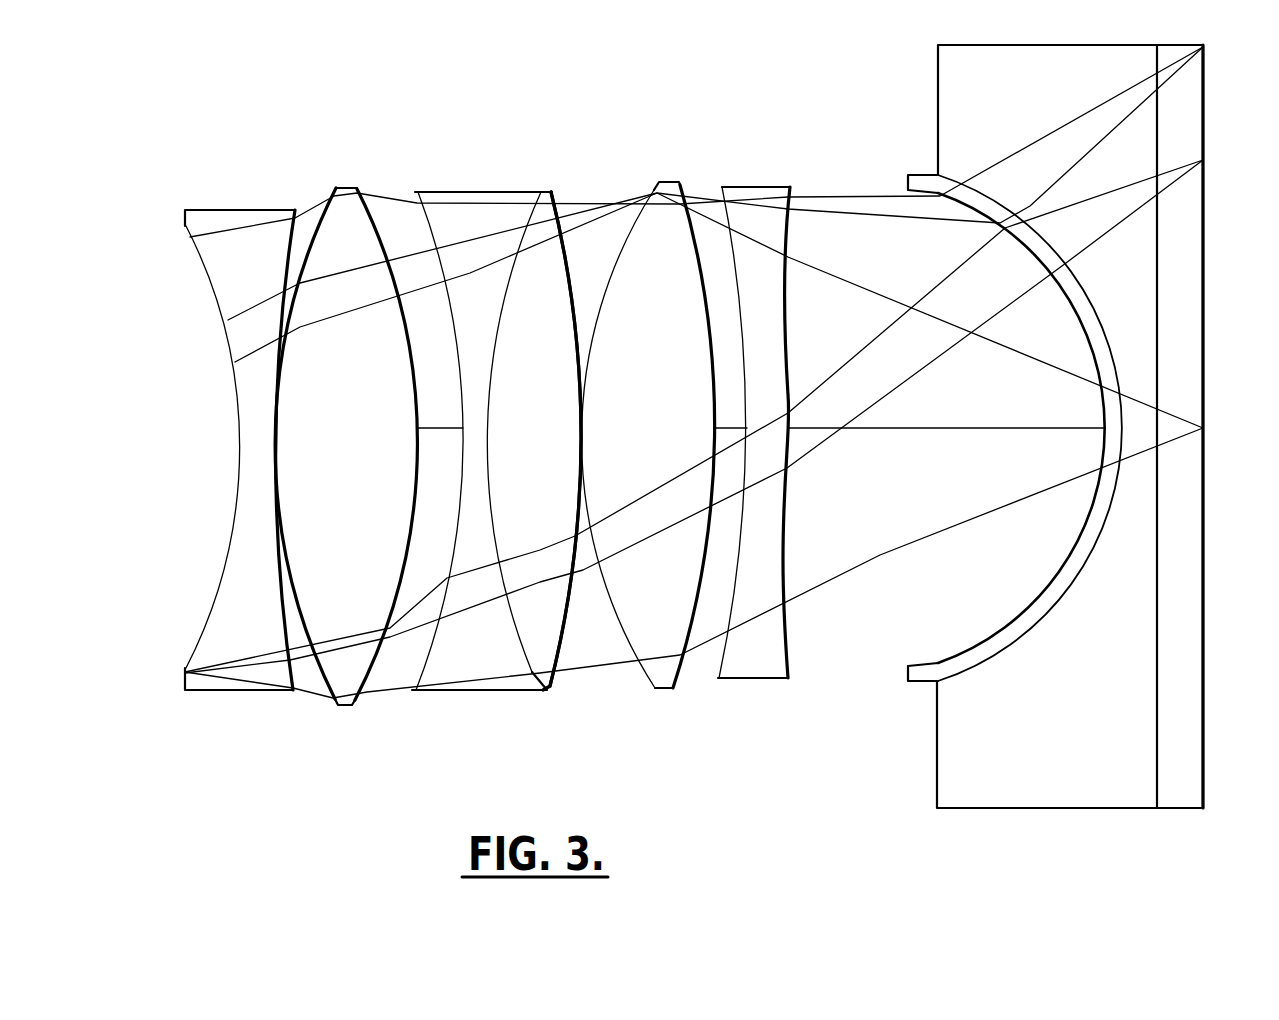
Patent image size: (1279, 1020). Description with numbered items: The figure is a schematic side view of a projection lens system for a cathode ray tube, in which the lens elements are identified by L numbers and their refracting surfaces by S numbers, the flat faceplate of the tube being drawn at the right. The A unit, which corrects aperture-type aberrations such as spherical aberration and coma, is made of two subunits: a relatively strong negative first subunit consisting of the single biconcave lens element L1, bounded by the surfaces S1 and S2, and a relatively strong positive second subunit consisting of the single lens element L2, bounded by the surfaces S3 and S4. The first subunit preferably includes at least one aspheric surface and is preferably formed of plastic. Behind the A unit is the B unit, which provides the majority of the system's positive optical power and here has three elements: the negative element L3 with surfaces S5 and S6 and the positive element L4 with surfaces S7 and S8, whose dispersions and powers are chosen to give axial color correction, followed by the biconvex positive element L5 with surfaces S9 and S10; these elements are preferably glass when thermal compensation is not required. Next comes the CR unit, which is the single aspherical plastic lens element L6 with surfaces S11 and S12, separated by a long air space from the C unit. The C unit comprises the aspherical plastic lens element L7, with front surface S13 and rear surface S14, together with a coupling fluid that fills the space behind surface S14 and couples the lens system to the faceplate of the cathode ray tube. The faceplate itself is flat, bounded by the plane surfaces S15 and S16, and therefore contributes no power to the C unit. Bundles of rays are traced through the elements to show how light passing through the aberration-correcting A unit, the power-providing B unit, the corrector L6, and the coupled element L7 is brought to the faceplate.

The first lens subunit element L1 is at (214, 409).
The second lens subunit element L2 is at (322, 454).
The negative color-correcting lens element L3 is at (474, 442).
The positive color-correcting lens element L4 is at (551, 453).
The biconvex positive lens element L5 is at (648, 438).
The CR unit aspherical lens element L6 is at (774, 451).
The C unit aspherical lens element L7 is at (982, 438).
The first surface S1 is at (232, 556).
The second surface S2 is at (278, 605).
The third surface S3 is at (320, 677).
The fourth surface S4 is at (368, 690).
The fifth surface S5 is at (425, 655).
The sixth surface S6 is at (520, 650).
The seventh surface S7 is at (560, 645).
The eighth surface S8 is at (566, 632).
The ninth surface S9 is at (633, 657).
The tenth surface S10 is at (677, 672).
The eleventh surface S11 is at (717, 664).
The twelfth surface S12 is at (792, 656).
The thirteenth surface S13 is at (948, 656).
The fourteenth surface S14 is at (957, 678).
The fifteenth surface S15 is at (1157, 769).
The sixteenth surface S16 is at (1205, 774).